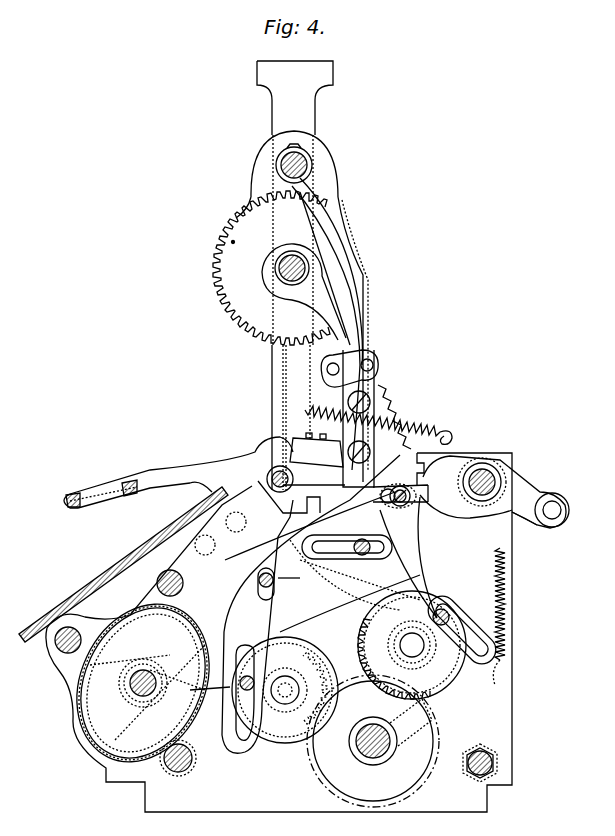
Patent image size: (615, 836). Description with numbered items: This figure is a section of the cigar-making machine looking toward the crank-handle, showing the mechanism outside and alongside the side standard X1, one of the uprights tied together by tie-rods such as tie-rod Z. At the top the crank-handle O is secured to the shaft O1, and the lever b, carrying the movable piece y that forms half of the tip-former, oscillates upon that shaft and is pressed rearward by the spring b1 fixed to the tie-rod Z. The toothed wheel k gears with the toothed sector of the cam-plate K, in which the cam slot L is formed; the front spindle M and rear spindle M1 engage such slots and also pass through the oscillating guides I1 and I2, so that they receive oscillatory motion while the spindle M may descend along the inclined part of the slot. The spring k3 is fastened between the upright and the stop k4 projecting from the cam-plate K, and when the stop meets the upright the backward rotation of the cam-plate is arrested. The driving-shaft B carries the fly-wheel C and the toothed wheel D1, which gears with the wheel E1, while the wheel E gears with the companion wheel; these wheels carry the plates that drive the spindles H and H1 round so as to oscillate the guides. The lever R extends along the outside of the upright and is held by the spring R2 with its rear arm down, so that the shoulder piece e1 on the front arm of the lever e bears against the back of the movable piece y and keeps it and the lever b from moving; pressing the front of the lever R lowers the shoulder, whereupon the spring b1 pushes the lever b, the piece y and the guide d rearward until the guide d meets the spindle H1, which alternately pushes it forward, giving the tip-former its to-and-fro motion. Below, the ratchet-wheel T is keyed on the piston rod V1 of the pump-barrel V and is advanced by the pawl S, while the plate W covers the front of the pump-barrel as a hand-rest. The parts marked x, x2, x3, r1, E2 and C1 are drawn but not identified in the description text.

The crank-handle O is at (295, 203).
The tie-rod Z is at (302, 306).
The toothed wheel k is at (233, 243).
The shaft O1 is at (304, 292).
The spring b1 is at (340, 264).
The lever b is at (346, 399).
The cam-plate K is at (341, 417).
The stop k4 is at (295, 412).
The spring k3 is at (428, 430).
The side standard X1 is at (279, 632).
The plate W is at (123, 564).
The lever R is at (88, 494).
The block x2 is at (316, 450).
The pivot x is at (280, 465).
The movable piece y is at (343, 488).
The lever e is at (493, 492).
The ring r1 is at (552, 510).
The adjustable piece e1 is at (398, 504).
The guide d is at (426, 548).
The slot x3 is at (347, 540).
The guide I2 is at (360, 580).
The spindle M1 is at (350, 602).
The pawl S is at (311, 604).
The spindle M is at (267, 576).
The cam slot L is at (290, 583).
The guide I1 is at (242, 745).
The spindle H is at (247, 674).
The ratchet-wheel T is at (143, 682).
The pump-barrel V is at (129, 683).
The rod V1 is at (147, 692).
The fly-wheel C is at (198, 697).
The gear E2 is at (280, 725).
The toothed wheel E is at (293, 690).
The toothed wheel E1 is at (412, 645).
The toothed wheel D1 is at (373, 741).
The driving-shaft B is at (376, 752).
The spindle H1 is at (448, 614).
The link C1 is at (461, 629).
The spring R2 is at (506, 612).